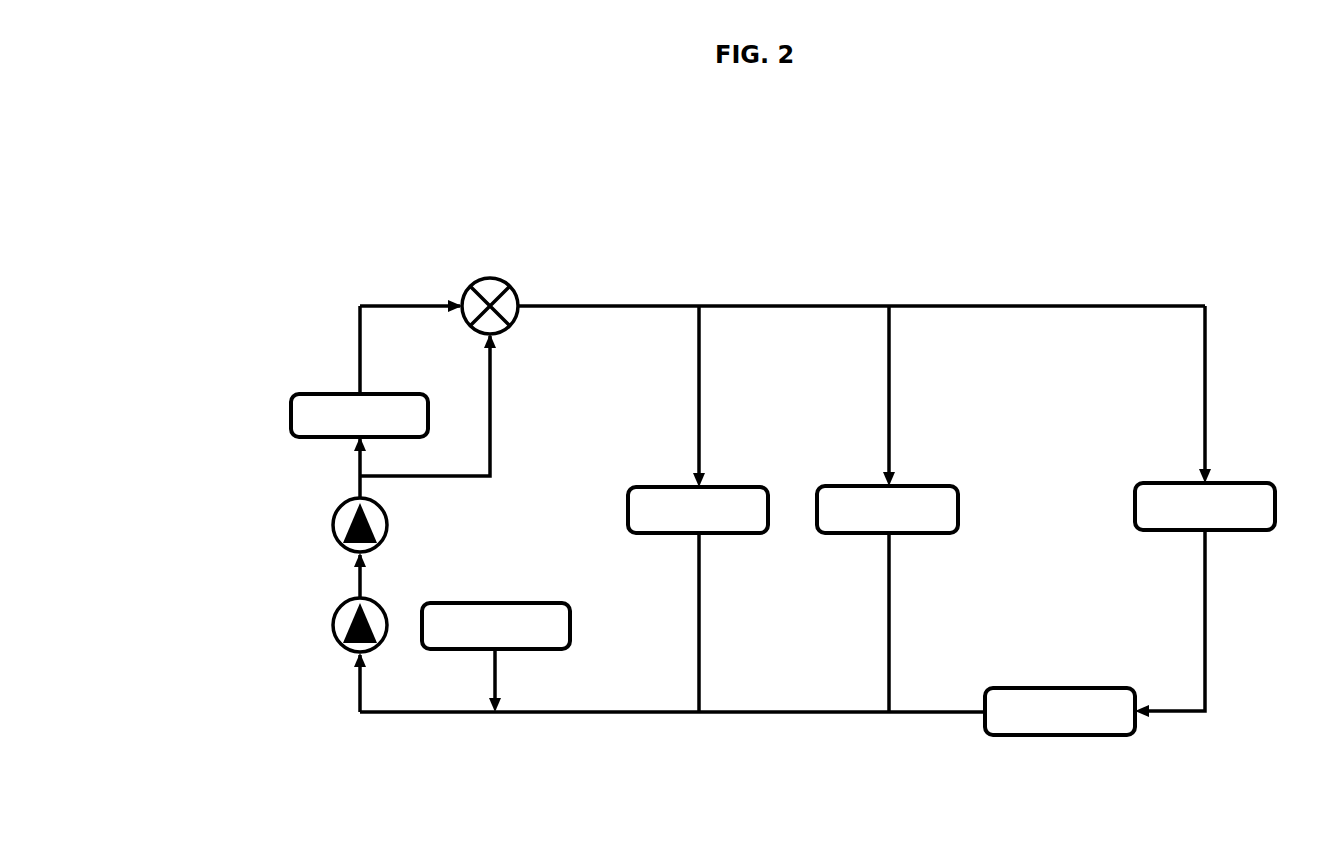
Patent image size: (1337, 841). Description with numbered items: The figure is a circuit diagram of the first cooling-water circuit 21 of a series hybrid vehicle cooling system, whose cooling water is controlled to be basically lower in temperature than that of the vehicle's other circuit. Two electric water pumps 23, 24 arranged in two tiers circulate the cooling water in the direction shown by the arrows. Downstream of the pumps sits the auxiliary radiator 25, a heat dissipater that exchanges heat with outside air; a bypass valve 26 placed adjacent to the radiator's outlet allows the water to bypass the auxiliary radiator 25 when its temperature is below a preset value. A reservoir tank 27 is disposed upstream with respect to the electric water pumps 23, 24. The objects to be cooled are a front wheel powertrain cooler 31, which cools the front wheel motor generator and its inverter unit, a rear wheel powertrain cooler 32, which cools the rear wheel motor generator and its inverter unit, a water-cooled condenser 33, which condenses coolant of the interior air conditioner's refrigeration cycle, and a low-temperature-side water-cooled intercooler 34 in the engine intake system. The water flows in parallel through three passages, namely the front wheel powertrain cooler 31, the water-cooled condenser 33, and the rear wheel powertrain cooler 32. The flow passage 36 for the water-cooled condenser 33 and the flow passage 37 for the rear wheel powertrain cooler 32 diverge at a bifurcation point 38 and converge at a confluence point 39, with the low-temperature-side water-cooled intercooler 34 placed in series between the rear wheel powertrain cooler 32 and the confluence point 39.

The first cooling-water circuit 21 is at (1040, 272).
The electric water pump 23 is at (333, 625).
The electric water pump 24 is at (333, 527).
The auxiliary radiator 25 is at (290, 420).
The bypass valve 26 is at (505, 283).
The reservoir tank 27 is at (513, 602).
The front wheel powertrain cooler 31 is at (657, 487).
The rear wheel powertrain cooler 32 is at (1133, 508).
The water-cooled condenser 33 is at (847, 486).
The low-temperature-side water-cooled intercooler 34 is at (1023, 688).
The flow passage 36 is at (889, 378).
The flow passage 37 is at (1207, 378).
The bifurcation point 38 is at (889, 305).
The confluence point 39 is at (892, 713).